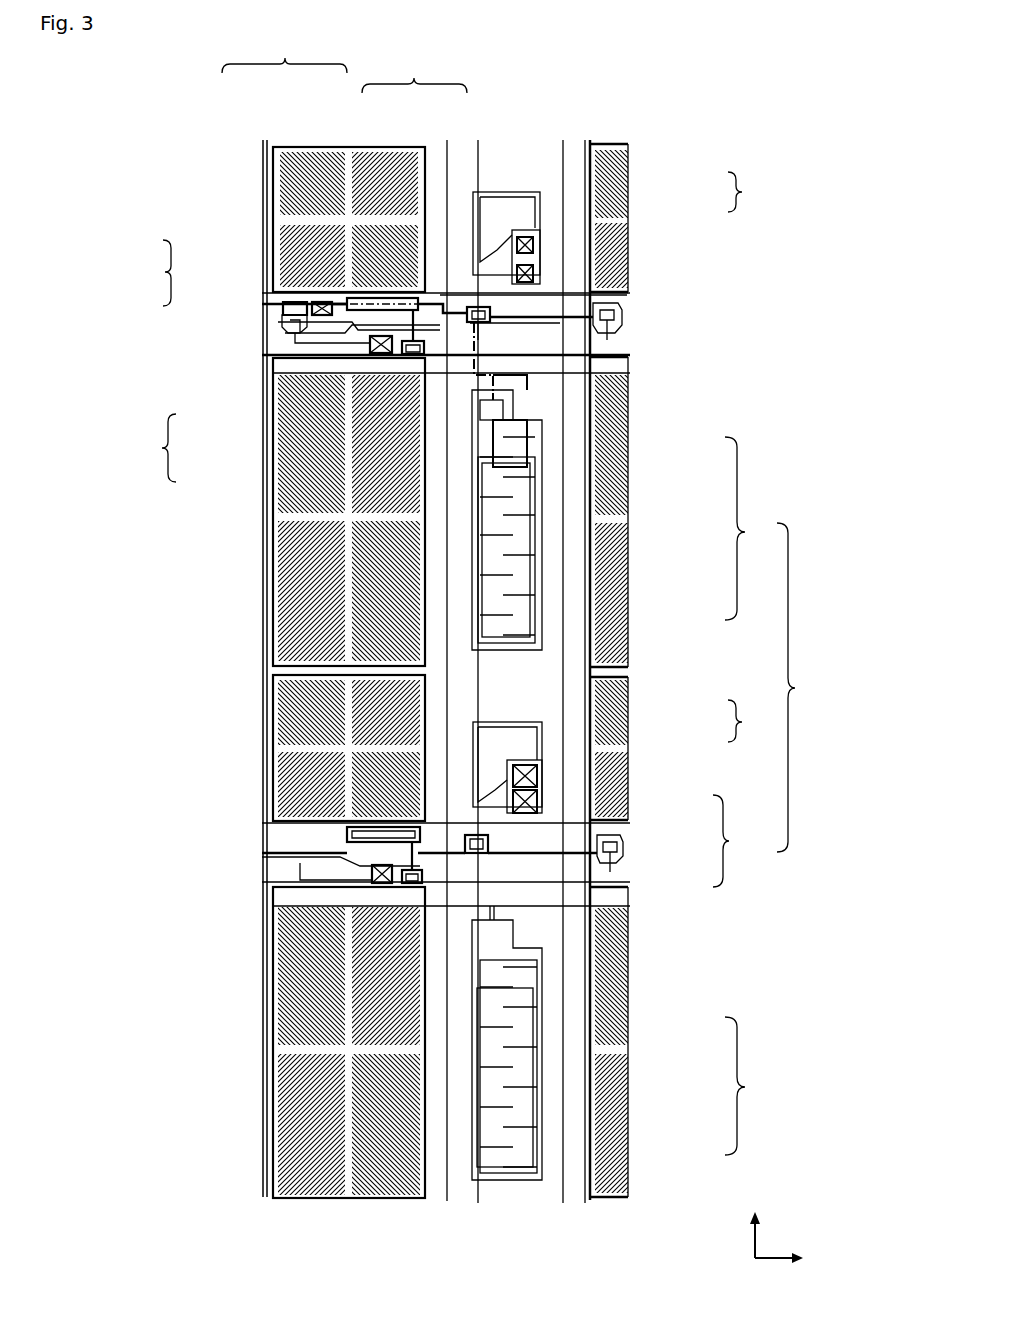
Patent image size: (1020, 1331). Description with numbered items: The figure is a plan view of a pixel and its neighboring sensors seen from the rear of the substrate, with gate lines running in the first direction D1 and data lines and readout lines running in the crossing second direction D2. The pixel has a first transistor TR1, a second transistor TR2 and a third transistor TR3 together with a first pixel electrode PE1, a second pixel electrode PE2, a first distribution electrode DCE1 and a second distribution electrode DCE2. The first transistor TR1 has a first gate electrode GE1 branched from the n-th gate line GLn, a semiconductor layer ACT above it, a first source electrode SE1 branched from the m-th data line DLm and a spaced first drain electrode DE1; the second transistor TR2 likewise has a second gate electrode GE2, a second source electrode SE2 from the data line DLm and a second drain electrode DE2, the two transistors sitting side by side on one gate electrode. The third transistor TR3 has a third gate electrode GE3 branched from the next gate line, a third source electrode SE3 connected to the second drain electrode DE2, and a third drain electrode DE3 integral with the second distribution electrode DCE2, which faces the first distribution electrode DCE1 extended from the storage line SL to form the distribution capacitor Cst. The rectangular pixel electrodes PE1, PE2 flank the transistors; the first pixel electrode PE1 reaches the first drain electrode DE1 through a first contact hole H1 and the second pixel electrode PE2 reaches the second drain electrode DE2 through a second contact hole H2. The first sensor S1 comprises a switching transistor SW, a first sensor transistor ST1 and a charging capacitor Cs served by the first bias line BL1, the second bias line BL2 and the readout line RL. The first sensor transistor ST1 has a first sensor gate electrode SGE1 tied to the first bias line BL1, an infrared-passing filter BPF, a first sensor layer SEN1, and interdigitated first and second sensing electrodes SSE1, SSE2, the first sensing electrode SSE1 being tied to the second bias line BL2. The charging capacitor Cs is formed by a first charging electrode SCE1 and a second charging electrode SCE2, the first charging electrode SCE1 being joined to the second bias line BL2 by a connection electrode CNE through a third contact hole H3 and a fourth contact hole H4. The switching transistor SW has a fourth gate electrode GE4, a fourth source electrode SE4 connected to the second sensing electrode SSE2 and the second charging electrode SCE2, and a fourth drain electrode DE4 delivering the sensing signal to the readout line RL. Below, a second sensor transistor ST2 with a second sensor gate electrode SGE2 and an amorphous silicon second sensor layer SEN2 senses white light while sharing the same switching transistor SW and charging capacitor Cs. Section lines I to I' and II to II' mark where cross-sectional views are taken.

The first transistor TR1 is at (149, 273).
The second transistor TR2 is at (284, 52).
The third transistor TR3 is at (151, 448).
The first source electrode SE1 is at (279, 313).
The first drain electrode DE1 is at (283, 310).
The first gate electrode GE1 is at (281, 305).
The second source electrode SE2 is at (297, 305).
The second drain electrode DE2 is at (322, 303).
The second gate electrode GE2 is at (318, 312).
The third source electrode SE3 is at (392, 357).
The third drain electrode DE3 is at (438, 378).
The third gate electrode GE3 is at (428, 365).
The fourth source electrode SE4 is at (490, 312).
The fourth drain electrode DE4 is at (540, 283).
The fourth gate electrode GE4 is at (537, 300).
The storage capacitor Cst is at (407, 448).
The first distribution electrode DCE1 is at (336, 298).
The second distribution electrode DCE2 is at (398, 298).
The storage line SL is at (275, 194).
The connection electrode CNE is at (513, 232).
The charging capacitor Cs is at (618, 489).
The first charging electrode SCE1 is at (545, 214).
The second charging electrode SCE2 is at (540, 192).
The first contact hole H1 is at (370, 347).
The second contact hole H2 is at (415, 347).
The third contact hole H3 is at (533, 245).
The fourth contact hole H4 is at (533, 272).
The semiconductor layer ACT is at (285, 330).
The n-th gate line GLn is at (268, 318).
The first pixel electrode PE1 is at (284, 218).
The second pixel electrode PE2 is at (285, 520).
The first bias line BL1 is at (627, 374).
The second bias line BL2 is at (563, 1205).
The readout line RL is at (447, 1205).
The m-th data line DLm is at (270, 1205).
The first sensor transistor ST1 is at (623, 520).
The second sensor transistor ST2 is at (623, 1043).
The first sensor S1 is at (797, 687).
The switching transistor SW is at (737, 841).
The first sensor gate electrode SGE1 is at (535, 403).
The second sensor gate electrode SGE2 is at (543, 1100).
The first sensor layer SEN1 is at (533, 487).
The second sensor layer SEN2 is at (533, 1022).
The first sensing electrode SSE1 is at (542, 523).
The second sensing electrode SSE2 is at (480, 605).
The filter BPF is at (542, 567).
The first direction D1 is at (791, 1258).
The second direction D2 is at (756, 1223).
The section line I is at (251, 312).
The section line I' is at (524, 315).
The section line II is at (449, 836).
The section line II' is at (486, 930).